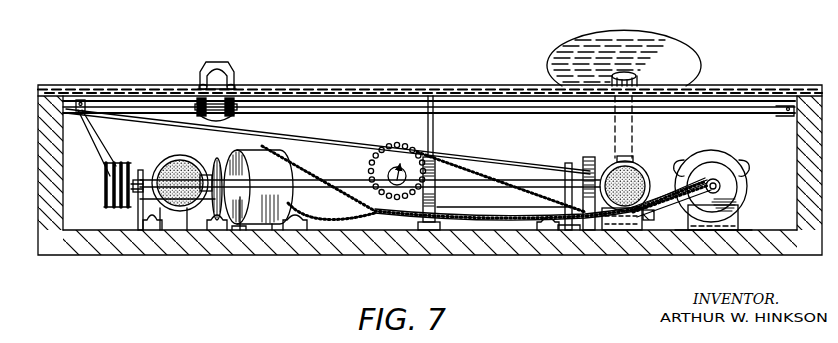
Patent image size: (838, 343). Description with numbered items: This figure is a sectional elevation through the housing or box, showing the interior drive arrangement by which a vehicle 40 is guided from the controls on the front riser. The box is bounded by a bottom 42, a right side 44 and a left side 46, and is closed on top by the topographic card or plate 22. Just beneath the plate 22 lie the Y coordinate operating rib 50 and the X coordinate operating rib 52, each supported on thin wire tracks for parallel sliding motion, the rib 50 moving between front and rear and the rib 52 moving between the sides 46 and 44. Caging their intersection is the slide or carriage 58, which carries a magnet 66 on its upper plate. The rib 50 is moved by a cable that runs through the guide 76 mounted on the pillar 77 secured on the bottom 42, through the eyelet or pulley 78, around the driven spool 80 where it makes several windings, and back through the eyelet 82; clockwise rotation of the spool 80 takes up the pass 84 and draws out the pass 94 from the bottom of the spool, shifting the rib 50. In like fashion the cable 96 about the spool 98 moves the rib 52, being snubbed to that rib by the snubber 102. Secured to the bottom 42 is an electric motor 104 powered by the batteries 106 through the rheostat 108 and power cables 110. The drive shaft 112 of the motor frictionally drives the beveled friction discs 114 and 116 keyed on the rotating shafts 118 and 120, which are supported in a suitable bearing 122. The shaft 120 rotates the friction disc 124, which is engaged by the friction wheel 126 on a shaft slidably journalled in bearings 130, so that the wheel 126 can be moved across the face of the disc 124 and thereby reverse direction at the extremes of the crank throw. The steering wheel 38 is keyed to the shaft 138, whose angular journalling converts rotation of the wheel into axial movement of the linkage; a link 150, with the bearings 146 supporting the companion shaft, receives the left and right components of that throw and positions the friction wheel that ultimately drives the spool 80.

The topographic card or plate 22 is at (797, 94).
The steering wheel 38 is at (655, 44).
The vehicle 40 is at (239, 59).
The bottom 42 is at (562, 252).
The right side 44 is at (55, 245).
The left side 46 is at (803, 210).
The Y coordinate operating rib 50 is at (718, 106).
The X coordinate operating rib 52 is at (196, 109).
The slide or carriage 58 is at (293, 94).
The magnet 66 is at (246, 96).
The guide 76 is at (435, 138).
The pillar 77 is at (437, 167).
The eyelet or pulley 78 is at (81, 99).
The driven spool 80 is at (110, 203).
The eyelet 82 is at (780, 117).
The pass 84 is at (106, 160).
The pass 94 is at (100, 140).
The cable 96 is at (335, 134).
The spool 98 is at (638, 172).
The snubber 102 is at (207, 93).
The electric motor 104 is at (292, 224).
The batteries 106 is at (723, 156).
The rheostat 108 is at (372, 159).
The power cables 110 is at (500, 226).
The drive shaft 112 is at (190, 203).
The beveled friction disc 114 is at (166, 166).
The beveled friction disc 116 is at (222, 213).
The rotating shaft 118 is at (211, 160).
The rotating shaft 120 is at (329, 226).
The bearing 122 is at (565, 163).
The friction disc 124 is at (597, 157).
The friction wheel 126 is at (648, 228).
The bearings 130 is at (613, 230).
The shaft 138 is at (627, 156).
The bearings 146 is at (139, 218).
The link 150 is at (393, 213).